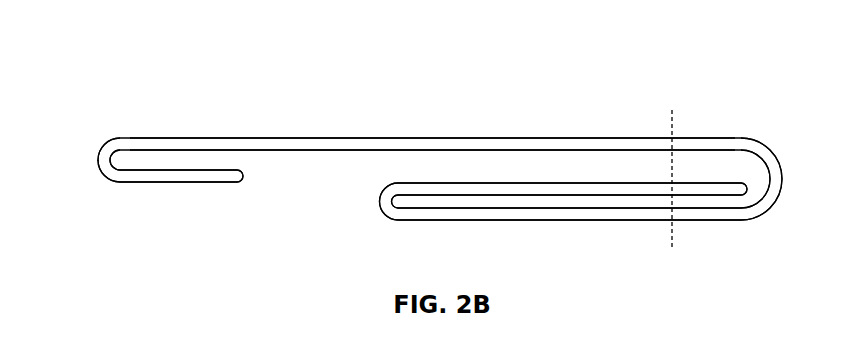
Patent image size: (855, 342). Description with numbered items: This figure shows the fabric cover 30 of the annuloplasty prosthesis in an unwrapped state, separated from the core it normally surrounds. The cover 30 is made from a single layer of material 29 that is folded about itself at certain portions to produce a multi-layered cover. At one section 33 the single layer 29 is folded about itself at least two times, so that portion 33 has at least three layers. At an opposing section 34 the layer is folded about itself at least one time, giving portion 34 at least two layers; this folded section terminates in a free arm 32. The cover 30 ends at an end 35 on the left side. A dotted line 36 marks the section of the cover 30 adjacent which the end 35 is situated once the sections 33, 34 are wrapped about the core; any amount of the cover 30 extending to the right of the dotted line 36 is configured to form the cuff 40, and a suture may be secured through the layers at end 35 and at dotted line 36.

The fabric cover 30 is at (163, 33).
The single layer of material 29 is at (370, 137).
The opposing section 34 is at (133, 138).
The end of cover 35 is at (97, 162).
The lower left arm 32 is at (167, 183).
The section of cover 33 is at (522, 221).
The cuff 40 is at (730, 138).
The dotted line 36 is at (705, 93).